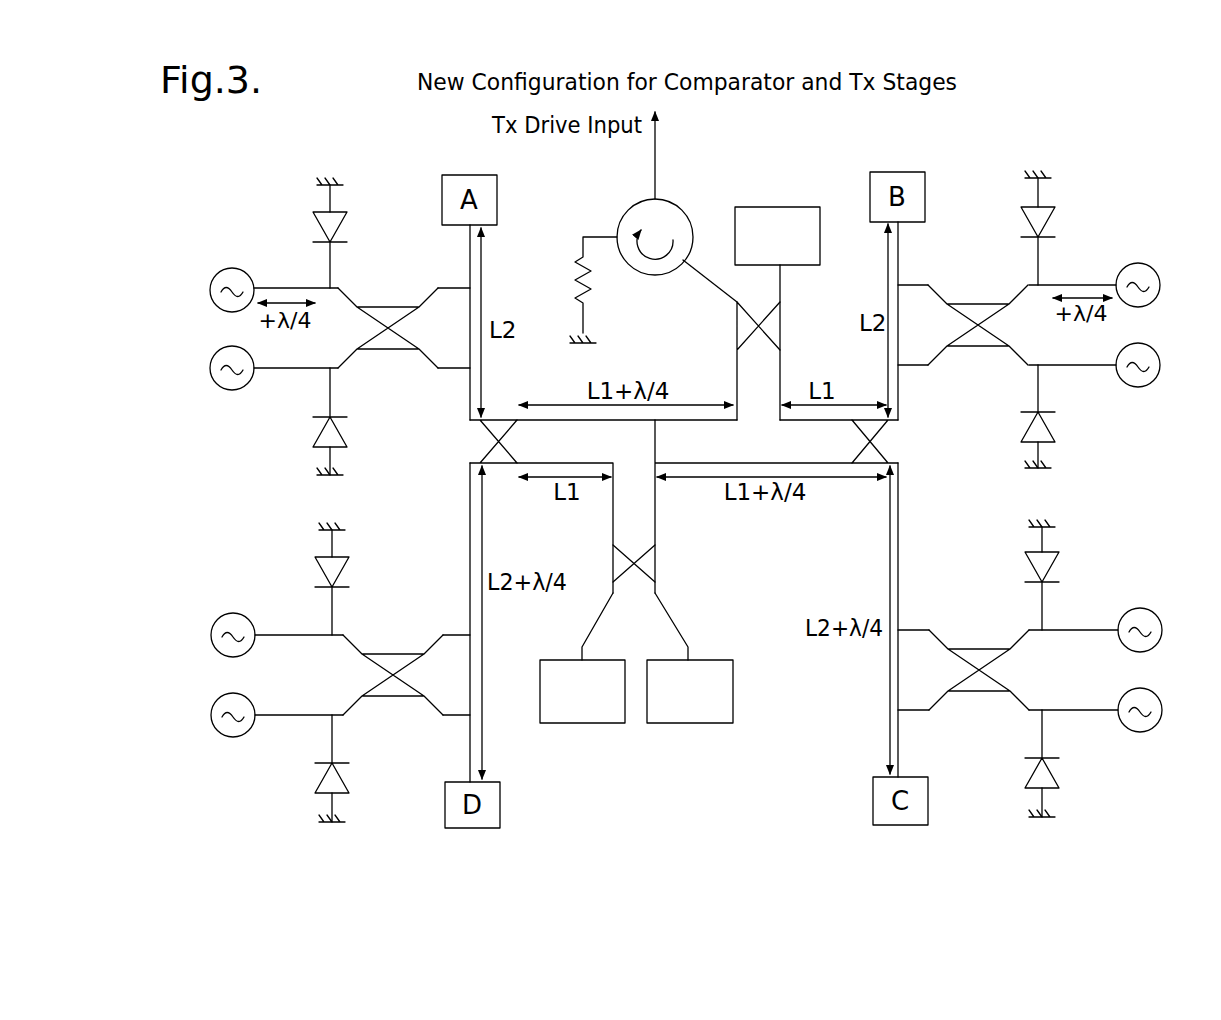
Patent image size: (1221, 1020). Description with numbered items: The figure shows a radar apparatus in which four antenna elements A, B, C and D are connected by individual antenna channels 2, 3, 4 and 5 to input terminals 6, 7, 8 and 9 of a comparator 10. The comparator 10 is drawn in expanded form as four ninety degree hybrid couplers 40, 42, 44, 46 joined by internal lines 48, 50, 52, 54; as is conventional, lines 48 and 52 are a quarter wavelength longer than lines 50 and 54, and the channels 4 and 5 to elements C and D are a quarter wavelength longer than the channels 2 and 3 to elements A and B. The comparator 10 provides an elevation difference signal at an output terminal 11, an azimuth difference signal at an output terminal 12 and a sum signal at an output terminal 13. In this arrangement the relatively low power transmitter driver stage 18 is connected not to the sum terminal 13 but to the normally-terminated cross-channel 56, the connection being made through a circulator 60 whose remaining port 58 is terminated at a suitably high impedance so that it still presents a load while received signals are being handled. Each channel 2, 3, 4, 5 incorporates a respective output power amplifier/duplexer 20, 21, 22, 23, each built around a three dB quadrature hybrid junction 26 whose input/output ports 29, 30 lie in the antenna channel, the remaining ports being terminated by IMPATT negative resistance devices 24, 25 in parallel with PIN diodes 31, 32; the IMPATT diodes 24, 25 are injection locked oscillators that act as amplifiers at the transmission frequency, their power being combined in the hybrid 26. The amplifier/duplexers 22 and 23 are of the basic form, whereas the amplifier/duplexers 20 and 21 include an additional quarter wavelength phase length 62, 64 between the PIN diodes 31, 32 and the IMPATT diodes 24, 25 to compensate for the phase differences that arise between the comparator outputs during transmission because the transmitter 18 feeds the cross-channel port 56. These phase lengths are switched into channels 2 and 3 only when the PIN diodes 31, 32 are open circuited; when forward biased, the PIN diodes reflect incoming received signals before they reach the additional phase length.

The antenna channel 2 is at (470, 243).
The antenna channel 3 is at (898, 250).
The antenna channel 4 is at (898, 746).
The antenna channel 5 is at (470, 748).
The input terminal 6 is at (470, 421).
The input terminal 7 is at (905, 420).
The input terminal 8 is at (898, 463).
The input terminal 9 is at (470, 463).
The comparator 10 is at (688, 417).
The output terminal 11 is at (780, 292).
The output terminal 12 is at (578, 652).
The output terminal 13 is at (688, 627).
The transmitter driver stage 18 is at (655, 152).
The output power amplifier/duplexer 20 is at (631, 300).
The output power amplifier/duplexer 21 is at (1099, 166).
The output power amplifier/duplexer 22 is at (1110, 801).
The output power amplifier/duplexer 23 is at (290, 808).
The negative resistance device 24 is at (210, 372).
The negative resistance device 25 is at (210, 290).
The quadrature hybrid junction 26 is at (392, 307).
The input/output port 29 is at (433, 369).
The input/output port 30 is at (451, 292).
The PIN diode 31 is at (340, 437).
The PIN diode 32 is at (334, 225).
The hybrid coupler 40 is at (497, 420).
The hybrid coupler 42 is at (758, 340).
The hybrid coupler 44 is at (868, 420).
The hybrid coupler 46 is at (643, 553).
The internal line 48 is at (660, 421).
The internal line 50 is at (838, 433).
The internal line 52 is at (727, 462).
The internal line 54 is at (563, 462).
The cross-channel 56 is at (710, 283).
The remaining port 58 is at (598, 236).
The circulator 60 is at (668, 222).
The additional quarter-wavelength phase length 62 is at (298, 368).
The additional quarter-wavelength phase length 64 is at (280, 288).